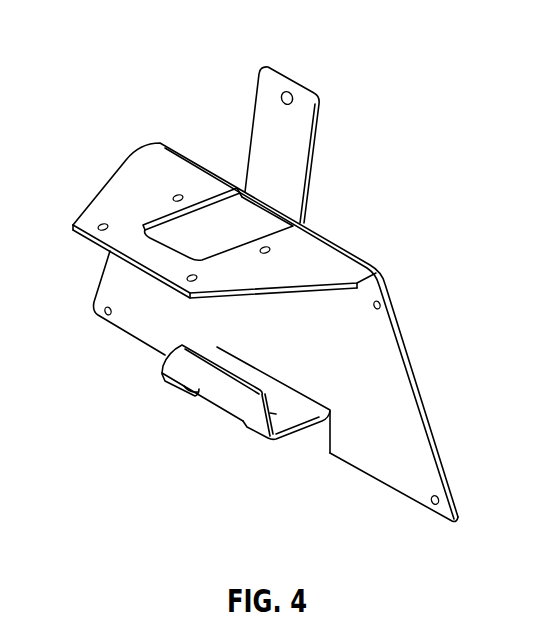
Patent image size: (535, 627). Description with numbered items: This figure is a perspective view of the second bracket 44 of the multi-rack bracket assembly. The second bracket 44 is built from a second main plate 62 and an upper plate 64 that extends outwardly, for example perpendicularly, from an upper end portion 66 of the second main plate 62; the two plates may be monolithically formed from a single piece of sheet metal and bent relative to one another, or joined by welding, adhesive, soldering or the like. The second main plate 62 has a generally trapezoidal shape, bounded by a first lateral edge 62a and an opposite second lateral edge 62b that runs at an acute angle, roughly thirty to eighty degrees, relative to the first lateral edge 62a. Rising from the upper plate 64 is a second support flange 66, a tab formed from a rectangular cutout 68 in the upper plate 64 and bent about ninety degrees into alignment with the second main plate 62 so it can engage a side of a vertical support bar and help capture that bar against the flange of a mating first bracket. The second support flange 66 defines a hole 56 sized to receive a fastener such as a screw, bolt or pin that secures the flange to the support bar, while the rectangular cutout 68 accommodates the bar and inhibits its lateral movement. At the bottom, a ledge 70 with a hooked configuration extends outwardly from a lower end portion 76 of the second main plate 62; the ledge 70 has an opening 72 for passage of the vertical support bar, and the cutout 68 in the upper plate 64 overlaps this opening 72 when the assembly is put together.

The second bracket 44 is at (116, 92).
The hole 56 is at (284, 95).
The second main plate 62 is at (411, 344).
The first lateral edge 62a is at (427, 413).
The second lateral edge 62b is at (96, 294).
The upper plate 64 is at (103, 190).
The second support flange 66 is at (320, 142).
The rectangular cutout 68 is at (207, 216).
The ledge 70 is at (283, 437).
The opening 72 is at (214, 411).
The lower end portion 76 is at (425, 478).